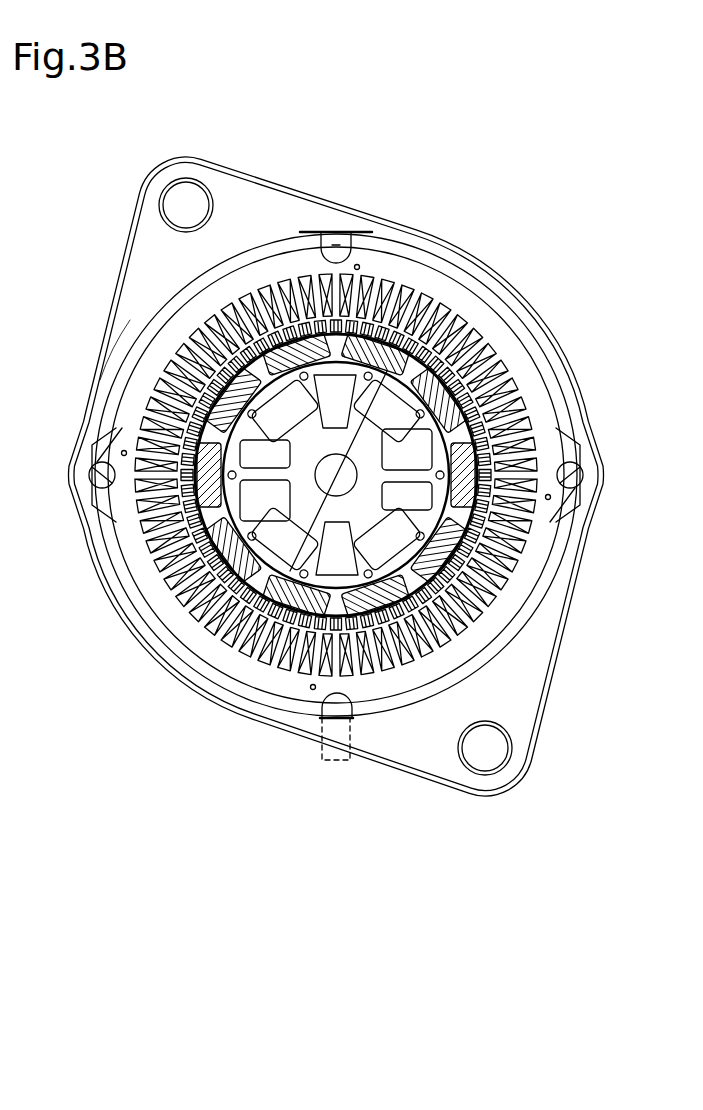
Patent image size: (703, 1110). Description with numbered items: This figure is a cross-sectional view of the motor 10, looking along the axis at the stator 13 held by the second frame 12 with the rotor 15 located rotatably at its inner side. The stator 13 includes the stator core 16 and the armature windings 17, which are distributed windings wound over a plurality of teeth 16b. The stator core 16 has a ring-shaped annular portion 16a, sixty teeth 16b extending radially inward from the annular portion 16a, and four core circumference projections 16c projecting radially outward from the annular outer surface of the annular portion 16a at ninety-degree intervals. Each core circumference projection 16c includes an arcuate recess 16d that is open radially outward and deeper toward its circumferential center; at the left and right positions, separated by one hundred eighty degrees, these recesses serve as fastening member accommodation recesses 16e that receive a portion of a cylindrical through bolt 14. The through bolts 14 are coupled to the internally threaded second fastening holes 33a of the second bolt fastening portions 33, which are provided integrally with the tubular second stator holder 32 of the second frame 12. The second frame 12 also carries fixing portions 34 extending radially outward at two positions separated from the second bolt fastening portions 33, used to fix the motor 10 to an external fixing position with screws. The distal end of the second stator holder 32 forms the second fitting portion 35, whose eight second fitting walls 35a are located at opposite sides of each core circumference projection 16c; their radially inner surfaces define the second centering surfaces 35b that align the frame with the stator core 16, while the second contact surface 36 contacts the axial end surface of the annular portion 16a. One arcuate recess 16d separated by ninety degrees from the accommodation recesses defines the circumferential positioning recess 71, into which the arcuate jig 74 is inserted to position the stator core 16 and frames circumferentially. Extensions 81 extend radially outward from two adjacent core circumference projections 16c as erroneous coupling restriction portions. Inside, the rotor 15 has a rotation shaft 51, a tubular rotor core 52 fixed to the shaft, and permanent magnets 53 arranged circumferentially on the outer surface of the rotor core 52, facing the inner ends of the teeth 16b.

The motor 10 is at (336, 486).
The second frame 12 is at (440, 792).
The stator 13 is at (500, 300).
The through bolt 14 is at (90, 475).
The rotor 15 is at (518, 338).
The stator core 16 is at (175, 335).
The annular portion 16a is at (145, 340).
The teeth 16b is at (295, 690).
The core circumference projection 16c is at (292, 236).
The arcuate recess 16d is at (326, 240).
The fastening member accommodation recess 16e is at (85, 452).
The armature windings 17 is at (210, 325).
The second stator holder 32 is at (482, 655).
The second bolt fastening portion 33 is at (88, 500).
The second fastening hole 33a is at (100, 520).
The fixing portion 34 is at (183, 178).
The second fitting portion 35 is at (404, 236).
The second fitting wall 35a is at (462, 268).
The second centering surface 35b is at (428, 248).
The second contact surface 36 is at (585, 520).
The rotation shaft 51 is at (335, 473).
The rotor core 52 is at (370, 582).
The permanent magnet 53 is at (336, 475).
The circumferential positioning recess 71 is at (176, 359).
The jig 74 is at (341, 766).
The extension 81 is at (352, 240).